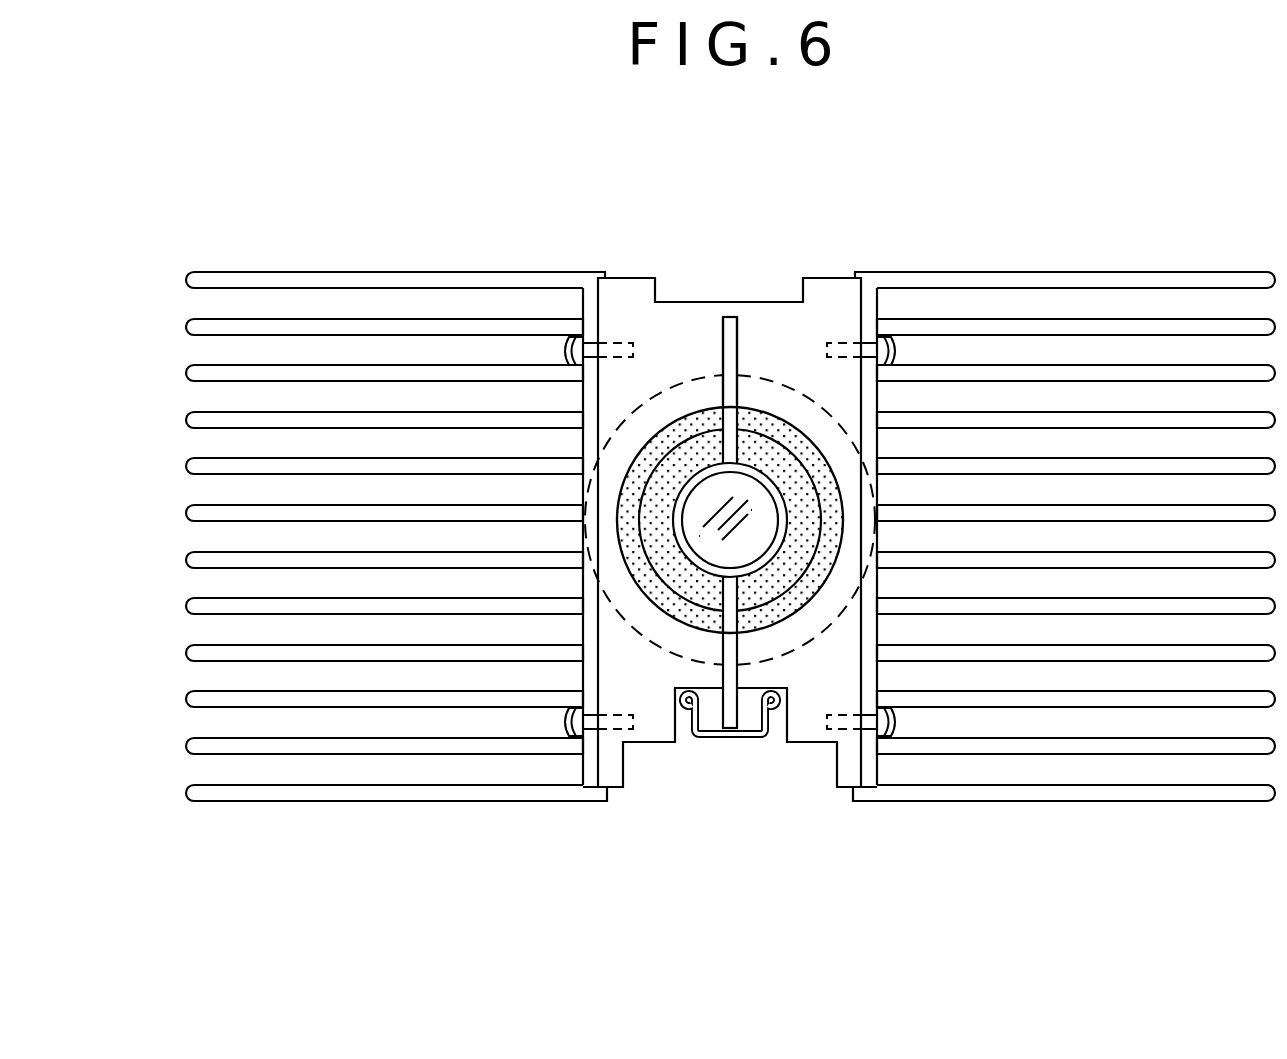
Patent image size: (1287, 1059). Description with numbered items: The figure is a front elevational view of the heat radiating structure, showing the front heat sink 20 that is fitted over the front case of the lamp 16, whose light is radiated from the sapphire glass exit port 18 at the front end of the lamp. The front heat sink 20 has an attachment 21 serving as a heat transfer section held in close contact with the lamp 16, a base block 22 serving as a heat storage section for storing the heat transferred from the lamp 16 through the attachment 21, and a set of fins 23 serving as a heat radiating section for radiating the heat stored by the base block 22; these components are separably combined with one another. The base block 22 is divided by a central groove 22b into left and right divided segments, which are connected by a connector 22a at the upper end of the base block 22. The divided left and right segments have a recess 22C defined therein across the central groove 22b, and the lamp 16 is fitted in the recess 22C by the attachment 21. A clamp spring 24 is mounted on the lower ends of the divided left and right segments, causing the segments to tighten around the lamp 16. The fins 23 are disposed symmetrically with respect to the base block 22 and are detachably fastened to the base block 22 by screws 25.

The lamp 16 is at (672, 383).
The exit port 18 is at (743, 548).
The front heat sink 20 is at (730, 272).
The attachment 21 is at (686, 592).
The base block 22 is at (800, 357).
The connector 22a is at (742, 302).
The central groove 22b is at (727, 338).
The recess 22C is at (833, 568).
The fins 23 is at (383, 335).
The clamp spring 24 is at (712, 741).
The screws 25 is at (568, 340).